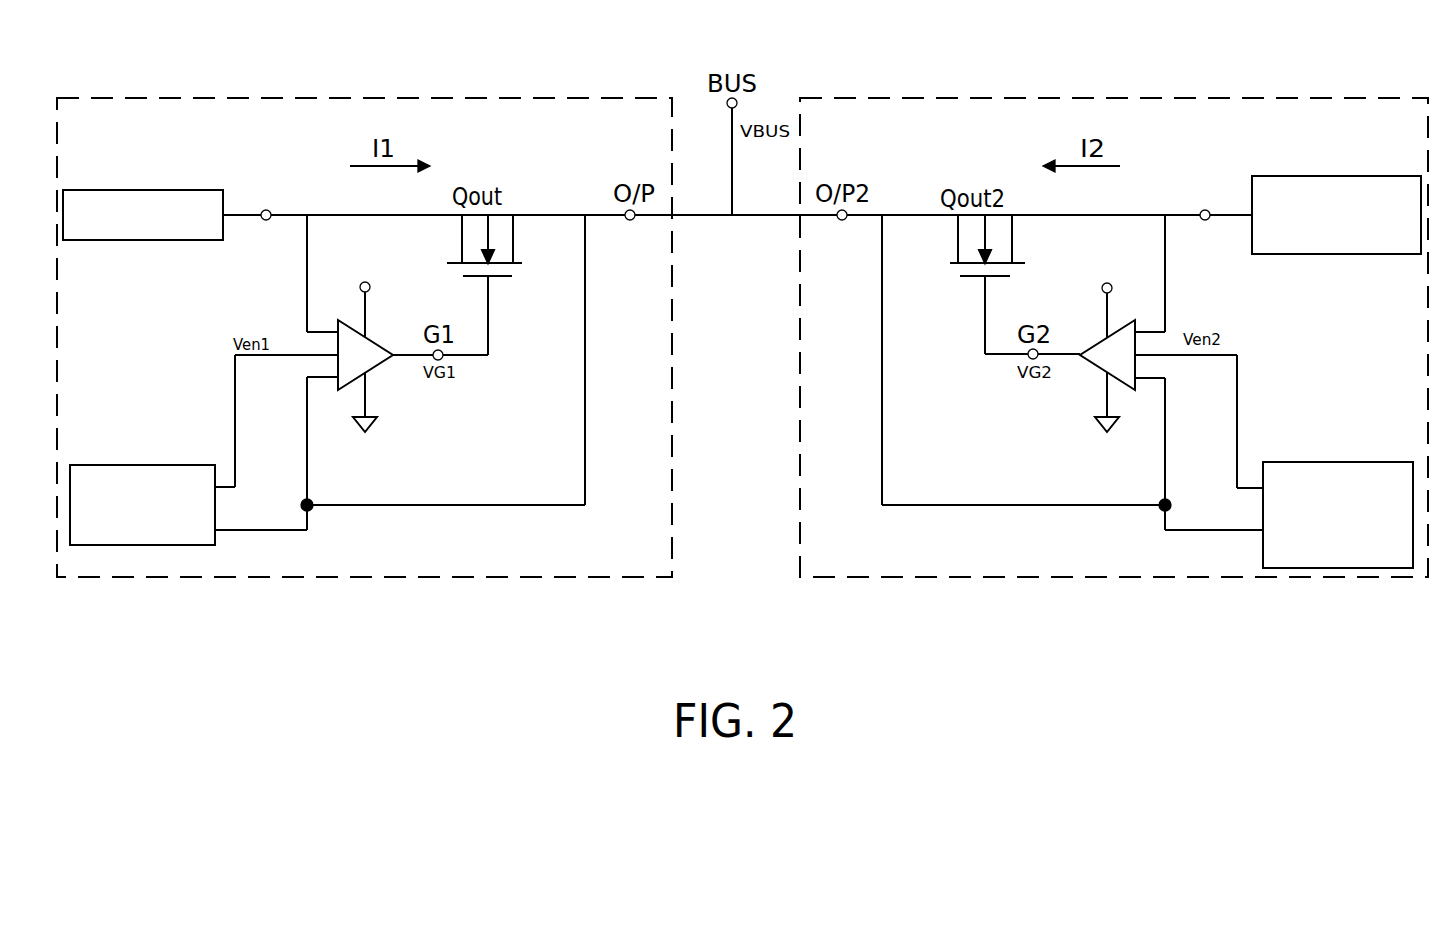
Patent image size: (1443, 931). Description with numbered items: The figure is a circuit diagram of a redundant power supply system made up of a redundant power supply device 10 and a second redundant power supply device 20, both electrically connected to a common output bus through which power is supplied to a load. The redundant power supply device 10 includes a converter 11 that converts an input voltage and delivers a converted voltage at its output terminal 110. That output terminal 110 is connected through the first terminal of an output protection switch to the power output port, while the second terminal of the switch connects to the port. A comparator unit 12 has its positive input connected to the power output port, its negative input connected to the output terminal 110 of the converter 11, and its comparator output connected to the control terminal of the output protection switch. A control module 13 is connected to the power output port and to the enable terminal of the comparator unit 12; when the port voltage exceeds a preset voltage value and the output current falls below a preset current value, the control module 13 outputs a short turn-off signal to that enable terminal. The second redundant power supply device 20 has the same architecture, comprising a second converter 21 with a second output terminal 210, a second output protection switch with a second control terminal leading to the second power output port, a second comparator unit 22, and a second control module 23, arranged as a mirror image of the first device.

The redundant power supply device 10 is at (372, 98).
The converter 11 is at (152, 190).
The comparator unit 12 is at (383, 388).
The control module 13 is at (143, 465).
The output terminal 110 is at (267, 214).
The second redundant power supply device 20 is at (1114, 98).
The second converter 21 is at (1332, 176).
The second comparator unit 22 is at (1090, 390).
The second control module 23 is at (1333, 462).
The second output terminal 210 is at (1205, 213).